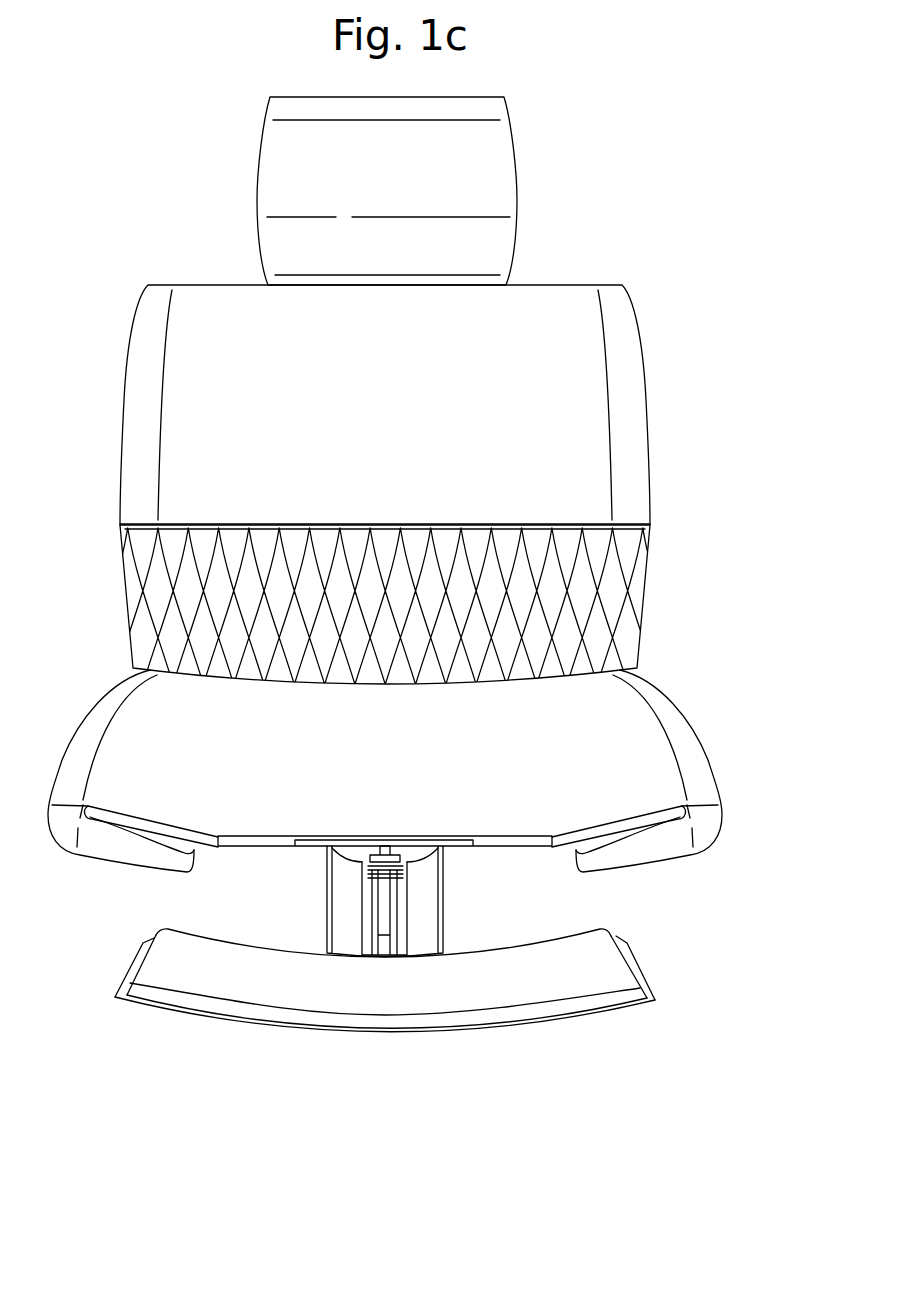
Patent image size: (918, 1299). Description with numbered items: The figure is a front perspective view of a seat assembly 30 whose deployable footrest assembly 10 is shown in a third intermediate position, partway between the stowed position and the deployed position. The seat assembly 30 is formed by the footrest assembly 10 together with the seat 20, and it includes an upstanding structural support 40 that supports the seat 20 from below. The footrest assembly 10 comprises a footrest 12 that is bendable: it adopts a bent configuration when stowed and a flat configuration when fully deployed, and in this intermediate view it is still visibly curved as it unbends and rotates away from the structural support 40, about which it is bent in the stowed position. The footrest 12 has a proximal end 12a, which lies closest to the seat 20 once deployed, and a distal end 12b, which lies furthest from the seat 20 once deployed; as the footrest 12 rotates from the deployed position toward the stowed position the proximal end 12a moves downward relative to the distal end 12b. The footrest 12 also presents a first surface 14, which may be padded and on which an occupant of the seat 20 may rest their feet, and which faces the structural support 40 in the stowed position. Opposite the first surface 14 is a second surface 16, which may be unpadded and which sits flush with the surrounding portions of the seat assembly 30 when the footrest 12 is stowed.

The deployable footrest assembly 10 is at (439, 1015).
The footrest 12 is at (421, 1015).
The proximal end 12a is at (550, 938).
The distal end 12b is at (237, 1018).
The first surface 14 is at (565, 980).
The second surface 16 is at (468, 1033).
The seat 20 is at (578, 413).
The seat assembly 30 is at (682, 490).
The structural support 40 is at (367, 898).